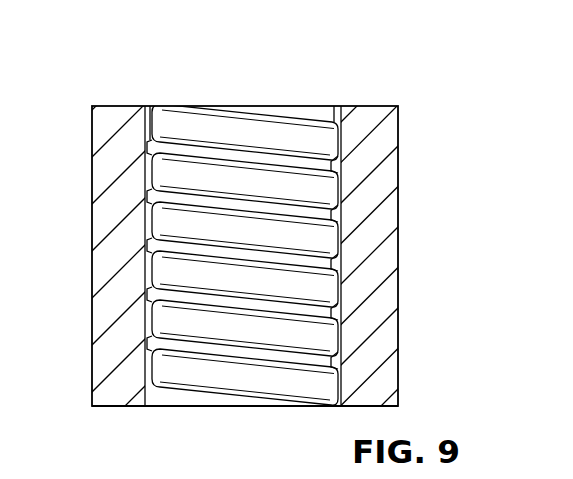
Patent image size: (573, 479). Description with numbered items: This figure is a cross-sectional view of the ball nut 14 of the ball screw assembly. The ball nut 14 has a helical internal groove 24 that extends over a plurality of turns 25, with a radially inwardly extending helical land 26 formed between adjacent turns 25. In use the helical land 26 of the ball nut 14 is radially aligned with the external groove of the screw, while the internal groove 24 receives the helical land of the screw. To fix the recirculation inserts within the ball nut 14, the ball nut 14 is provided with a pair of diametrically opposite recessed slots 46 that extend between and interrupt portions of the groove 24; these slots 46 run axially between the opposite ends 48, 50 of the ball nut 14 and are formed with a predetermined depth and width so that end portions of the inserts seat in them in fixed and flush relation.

The ball nut 14 is at (371, 92).
The helical internal groove 24 is at (205, 118).
The turns 25 is at (351, 143).
The helical land 26 is at (150, 147).
The recessed slots 46 is at (151, 136).
The end 48 is at (116, 406).
The end 50 is at (125, 106).